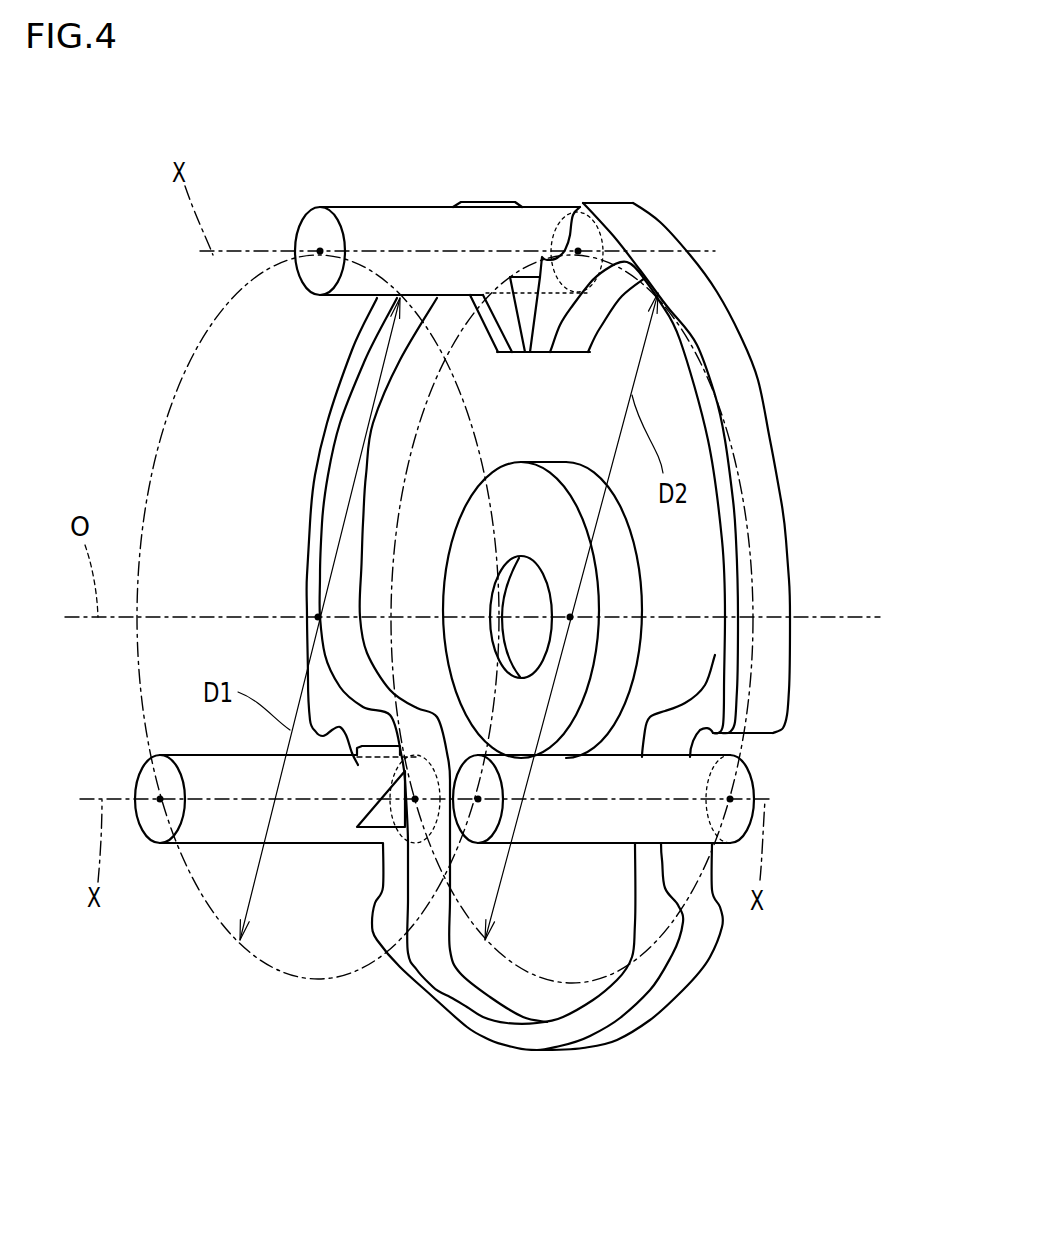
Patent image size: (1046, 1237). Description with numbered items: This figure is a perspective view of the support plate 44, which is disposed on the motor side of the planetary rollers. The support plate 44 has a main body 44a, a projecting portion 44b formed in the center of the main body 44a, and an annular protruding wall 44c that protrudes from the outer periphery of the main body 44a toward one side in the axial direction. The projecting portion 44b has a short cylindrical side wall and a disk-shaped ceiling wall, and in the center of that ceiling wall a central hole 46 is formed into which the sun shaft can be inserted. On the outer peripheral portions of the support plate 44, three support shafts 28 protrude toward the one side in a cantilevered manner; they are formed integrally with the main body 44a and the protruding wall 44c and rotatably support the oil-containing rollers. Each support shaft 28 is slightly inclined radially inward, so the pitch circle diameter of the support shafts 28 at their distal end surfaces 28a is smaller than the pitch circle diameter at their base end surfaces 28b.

The support shaft 28 is at (372, 233).
The distal end surface 28a is at (318, 243).
The base end surface 28b is at (600, 233).
The support plate 44 is at (770, 415).
The main body 44a is at (685, 527).
The projecting portion 44b is at (515, 487).
The annular protruding wall 44c is at (770, 567).
The central hole 46 is at (524, 568).